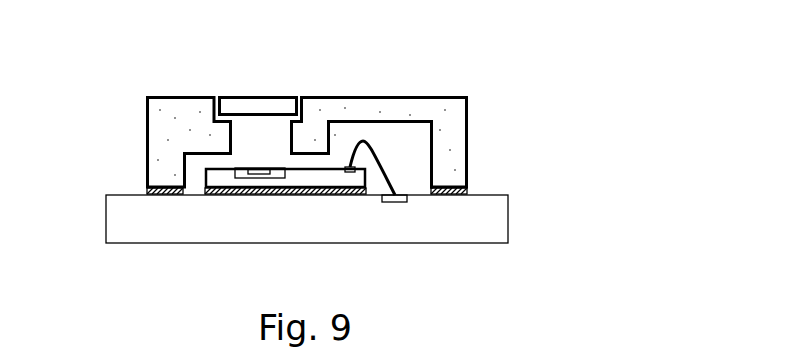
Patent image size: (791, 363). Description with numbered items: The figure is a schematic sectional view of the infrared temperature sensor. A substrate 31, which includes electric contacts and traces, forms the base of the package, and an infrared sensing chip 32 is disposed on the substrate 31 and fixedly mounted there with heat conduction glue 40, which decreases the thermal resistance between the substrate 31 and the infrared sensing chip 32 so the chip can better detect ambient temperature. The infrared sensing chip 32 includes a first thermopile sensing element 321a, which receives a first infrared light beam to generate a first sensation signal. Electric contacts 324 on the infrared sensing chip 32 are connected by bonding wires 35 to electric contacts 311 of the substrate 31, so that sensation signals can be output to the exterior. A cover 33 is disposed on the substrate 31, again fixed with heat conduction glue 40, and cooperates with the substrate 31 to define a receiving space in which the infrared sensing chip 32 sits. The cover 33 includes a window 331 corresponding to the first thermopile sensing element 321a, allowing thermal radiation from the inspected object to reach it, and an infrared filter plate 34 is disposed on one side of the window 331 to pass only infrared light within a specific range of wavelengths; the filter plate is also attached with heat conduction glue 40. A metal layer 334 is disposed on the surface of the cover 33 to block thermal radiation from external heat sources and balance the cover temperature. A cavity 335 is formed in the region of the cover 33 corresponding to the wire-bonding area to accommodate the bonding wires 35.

The substrate 31 is at (490, 218).
The electric contacts 311 is at (403, 201).
The infrared sensing chip 32 is at (213, 178).
The first thermopile sensing element 321a is at (262, 178).
The electric contacts 324 is at (353, 174).
The cover 33 is at (295, 109).
The window 331 is at (252, 138).
The metal layer 334 is at (146, 103).
The cavity 335 is at (403, 146).
The infrared filter plate 34 is at (277, 94).
The bonding wires 35 is at (384, 168).
The heat conduction glue 40 is at (146, 189).